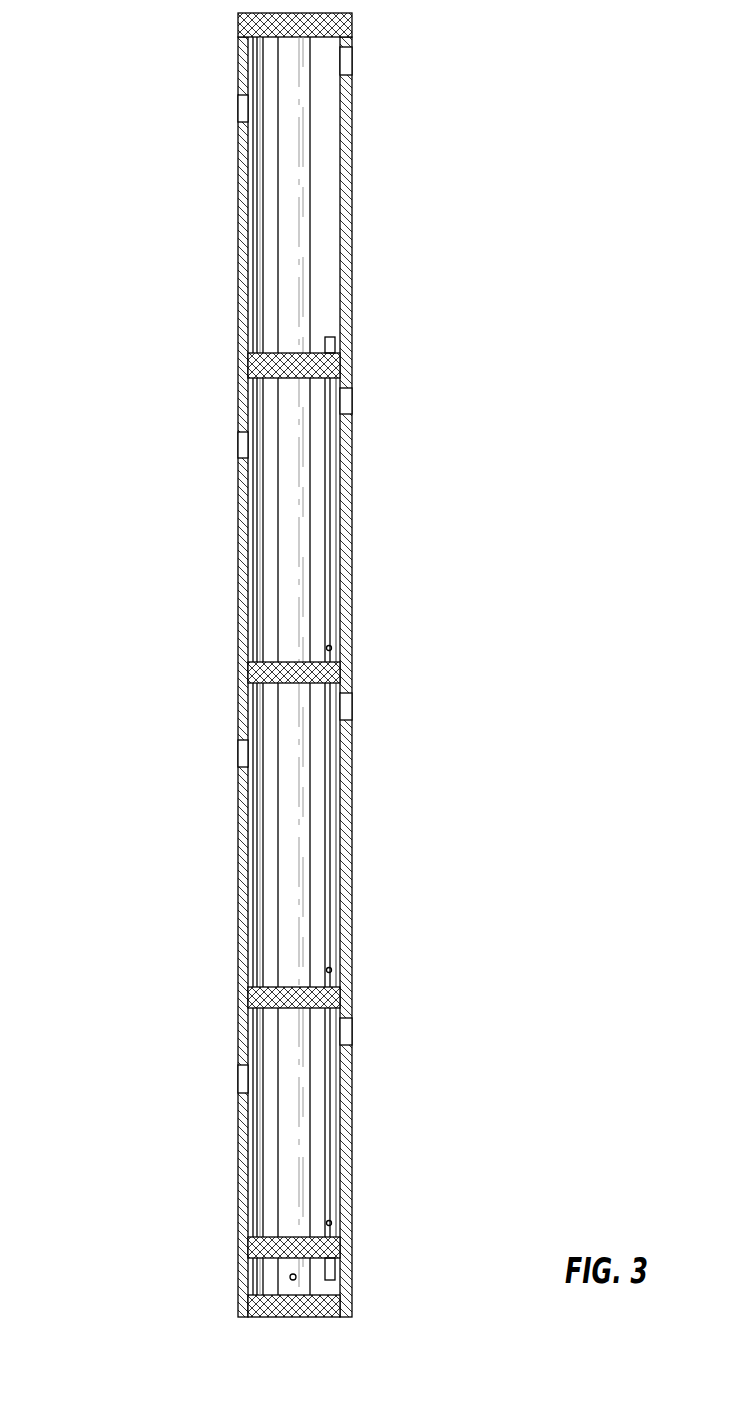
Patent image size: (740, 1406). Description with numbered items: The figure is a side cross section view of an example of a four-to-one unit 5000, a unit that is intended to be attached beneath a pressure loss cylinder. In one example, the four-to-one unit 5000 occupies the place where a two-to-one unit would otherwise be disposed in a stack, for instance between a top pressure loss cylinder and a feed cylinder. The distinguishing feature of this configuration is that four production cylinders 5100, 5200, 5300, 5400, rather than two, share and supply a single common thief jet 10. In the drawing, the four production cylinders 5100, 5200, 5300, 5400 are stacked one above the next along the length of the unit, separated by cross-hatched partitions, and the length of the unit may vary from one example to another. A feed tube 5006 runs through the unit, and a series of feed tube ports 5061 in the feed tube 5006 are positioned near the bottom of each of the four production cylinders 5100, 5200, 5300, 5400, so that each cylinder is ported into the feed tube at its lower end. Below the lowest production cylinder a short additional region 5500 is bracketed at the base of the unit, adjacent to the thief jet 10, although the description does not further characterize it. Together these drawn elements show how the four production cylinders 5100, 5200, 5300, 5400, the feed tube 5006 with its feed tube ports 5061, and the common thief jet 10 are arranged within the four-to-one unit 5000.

The 4-1 unit 5000 is at (289, 661).
The production cylinder 5100 is at (238, 13).
The production cylinder 5200 is at (248, 672).
The production cylinder 5300 is at (248, 998).
The production cylinder 5400 is at (248, 1247).
The fifth section 5500 is at (238, 1317).
The feed tube 5006 is at (332, 515).
The feed tube ports 5061 is at (330, 337).
The thief jet 10 is at (290, 1277).